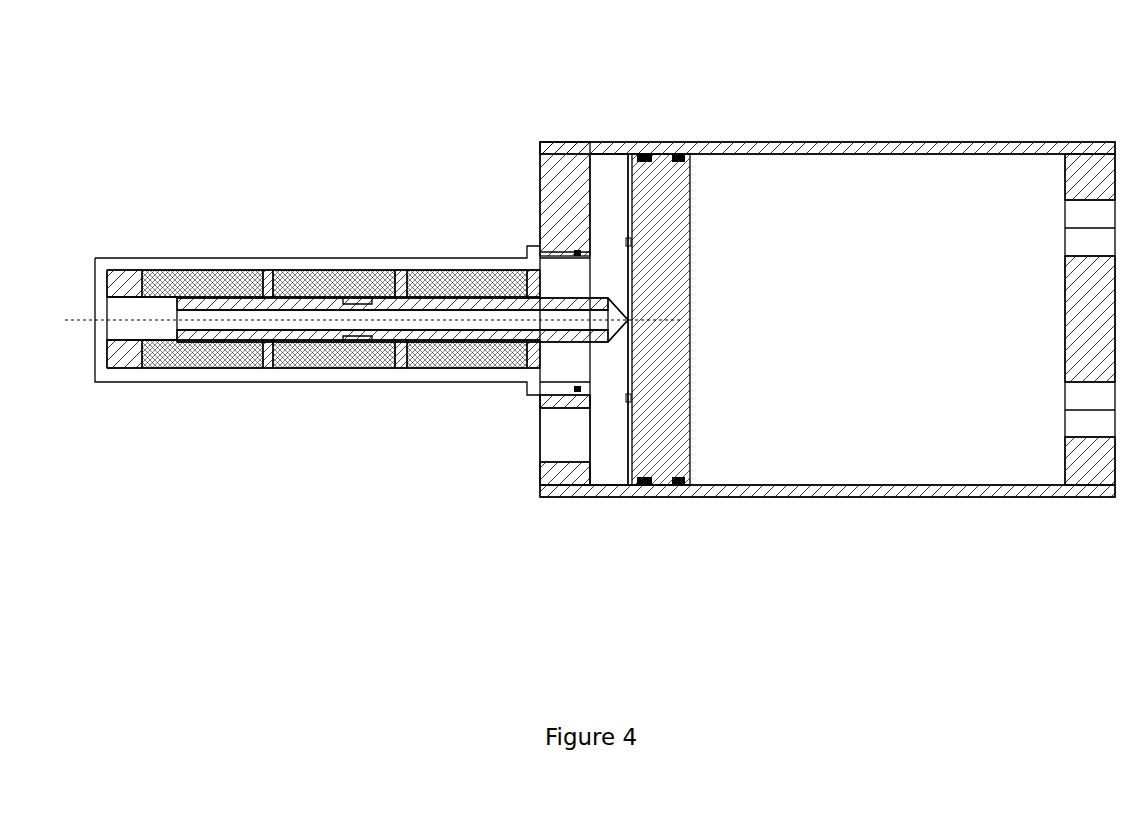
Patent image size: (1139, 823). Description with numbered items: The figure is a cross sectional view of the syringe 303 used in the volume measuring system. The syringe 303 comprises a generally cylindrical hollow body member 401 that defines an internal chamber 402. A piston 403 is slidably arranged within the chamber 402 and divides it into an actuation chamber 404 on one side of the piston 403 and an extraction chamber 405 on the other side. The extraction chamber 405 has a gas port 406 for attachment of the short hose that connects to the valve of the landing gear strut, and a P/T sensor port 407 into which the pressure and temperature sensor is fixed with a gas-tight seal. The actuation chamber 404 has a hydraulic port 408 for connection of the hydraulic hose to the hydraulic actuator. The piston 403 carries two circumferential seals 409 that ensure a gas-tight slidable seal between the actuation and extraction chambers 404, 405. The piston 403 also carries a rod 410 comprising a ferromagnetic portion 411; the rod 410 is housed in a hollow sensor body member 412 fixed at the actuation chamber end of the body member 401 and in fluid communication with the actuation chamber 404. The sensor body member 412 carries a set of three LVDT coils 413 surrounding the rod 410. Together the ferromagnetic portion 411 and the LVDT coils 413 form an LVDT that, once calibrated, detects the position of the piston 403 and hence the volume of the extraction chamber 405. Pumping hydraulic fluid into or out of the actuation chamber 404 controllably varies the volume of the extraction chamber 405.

The syringe 303 is at (572, 160).
The body member 401 is at (820, 142).
The internal chamber 402 is at (867, 458).
The piston 403 is at (655, 200).
The actuation chamber 404 is at (608, 460).
The extraction chamber 405 is at (890, 173).
The gas port 406 is at (1087, 419).
The P/T sensor port 407 is at (1083, 222).
The hydraulic port 408 is at (538, 453).
The circumferential seals 409 is at (678, 483).
The rod 410 is at (467, 297).
The ferromagnetic portion 411 is at (232, 325).
The sensor body member 412 is at (310, 258).
The LVDT coils 413 is at (203, 317).